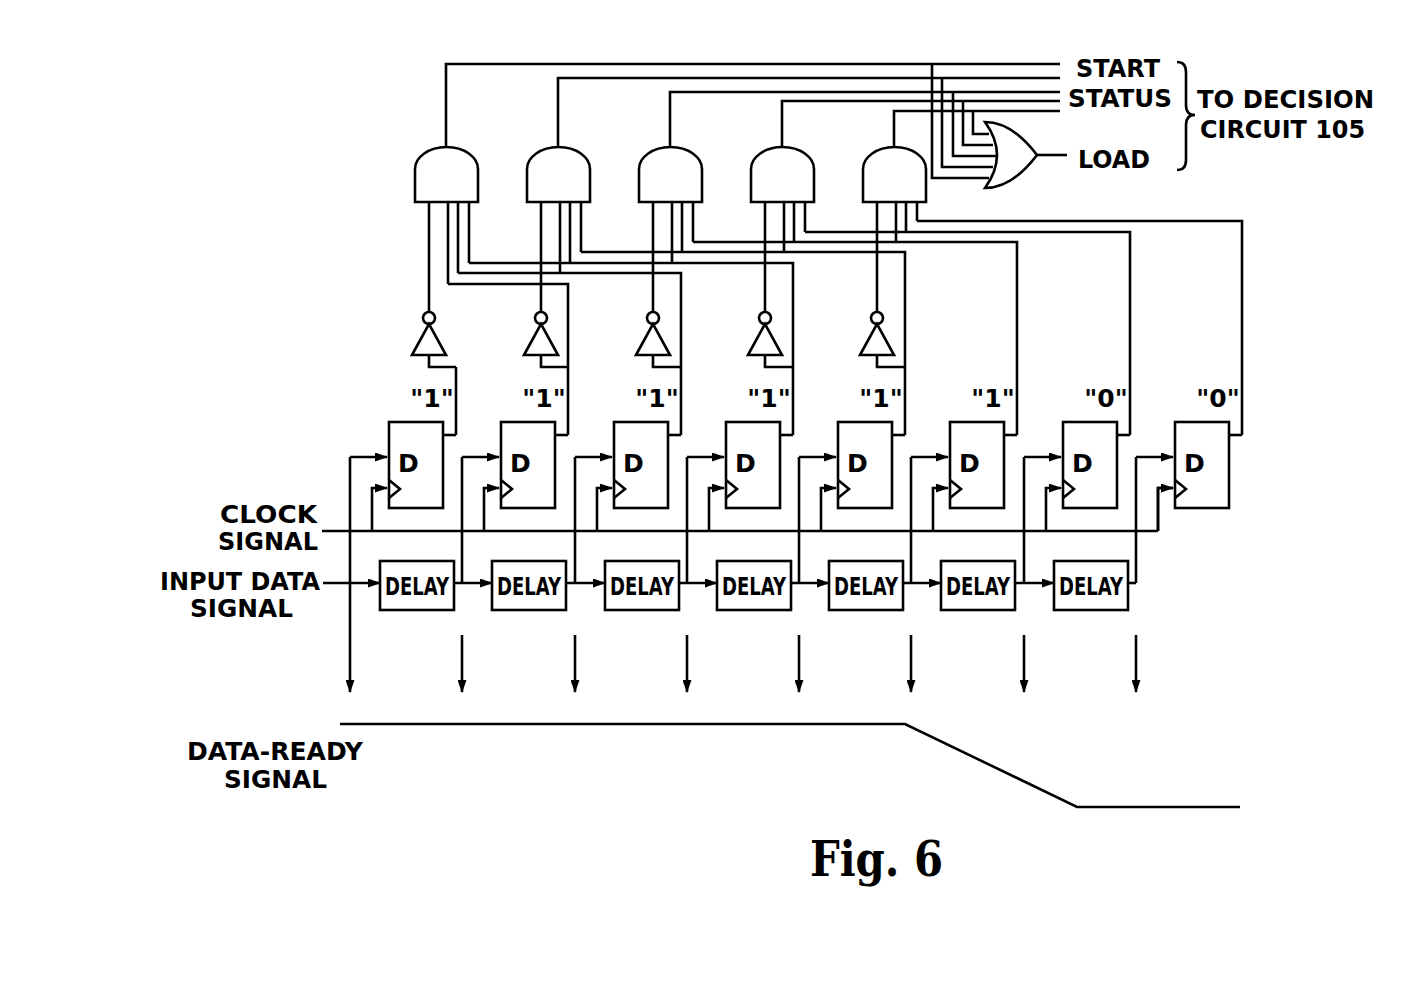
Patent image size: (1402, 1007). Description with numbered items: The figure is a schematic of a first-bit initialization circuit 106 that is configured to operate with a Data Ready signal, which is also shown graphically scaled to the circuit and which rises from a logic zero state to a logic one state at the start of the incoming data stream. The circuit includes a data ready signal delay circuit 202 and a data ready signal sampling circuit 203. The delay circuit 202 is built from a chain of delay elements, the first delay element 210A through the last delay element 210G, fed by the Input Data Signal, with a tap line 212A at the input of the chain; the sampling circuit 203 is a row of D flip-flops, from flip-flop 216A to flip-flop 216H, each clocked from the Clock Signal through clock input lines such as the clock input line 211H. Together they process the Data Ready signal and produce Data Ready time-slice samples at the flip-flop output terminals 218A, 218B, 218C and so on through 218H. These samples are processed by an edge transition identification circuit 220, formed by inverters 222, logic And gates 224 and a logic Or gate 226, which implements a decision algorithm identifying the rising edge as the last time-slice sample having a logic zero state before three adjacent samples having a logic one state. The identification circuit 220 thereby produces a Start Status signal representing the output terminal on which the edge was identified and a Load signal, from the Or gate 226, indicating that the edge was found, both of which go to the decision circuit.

The edge transition identification circuit 220 is at (386, 150).
The first-bit initialization circuit 106 is at (416, 310).
The logic And gates 224 is at (670, 229).
The inverters 222 is at (440, 342).
The logic Or gate 226 is at (999, 126).
The flip-flop output terminal 218A is at (456, 393).
The flip-flop output terminal 218B is at (568, 393).
The flip-flop output terminal 218C is at (681, 393).
The flip-flop output terminal 218H is at (1243, 333).
The flip-flop 216A is at (389, 435).
The flip-flop 216H is at (1229, 500).
The clock input line 211H is at (1137, 535).
The data tap line 212A is at (350, 590).
The delay element 210A is at (418, 611).
The delay element 210G is at (1107, 610).
The data ready signal sampling circuit 203 is at (1243, 448).
The data ready signal delay circuit 202 is at (1192, 591).